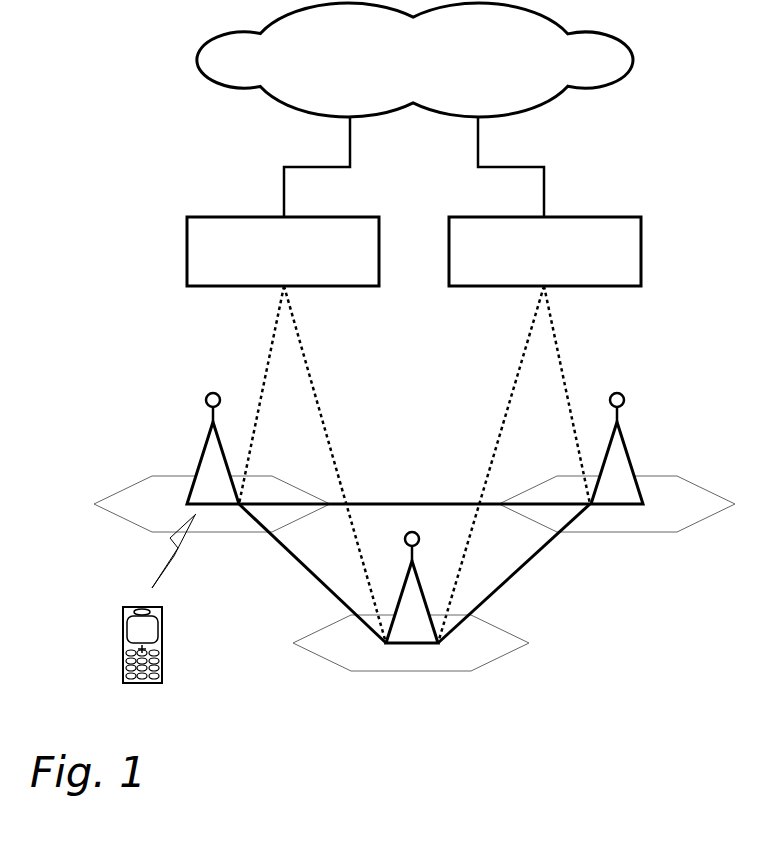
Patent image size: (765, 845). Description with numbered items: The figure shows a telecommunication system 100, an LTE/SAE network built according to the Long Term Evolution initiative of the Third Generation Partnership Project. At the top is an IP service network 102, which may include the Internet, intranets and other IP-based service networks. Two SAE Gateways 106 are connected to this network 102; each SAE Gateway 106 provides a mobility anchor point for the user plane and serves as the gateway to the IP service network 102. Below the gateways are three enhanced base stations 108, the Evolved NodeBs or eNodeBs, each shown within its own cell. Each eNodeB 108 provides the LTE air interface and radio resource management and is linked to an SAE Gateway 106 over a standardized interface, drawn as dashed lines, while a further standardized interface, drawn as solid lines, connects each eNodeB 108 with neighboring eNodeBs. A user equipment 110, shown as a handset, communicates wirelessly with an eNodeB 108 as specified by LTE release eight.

The telecommunication system 100 is at (133, 171).
The IP service network 102 is at (376, 71).
The SAE Gateway 106 is at (264, 249).
The enhanced base station 108 is at (212, 477).
The user equipment 110 is at (142, 685).